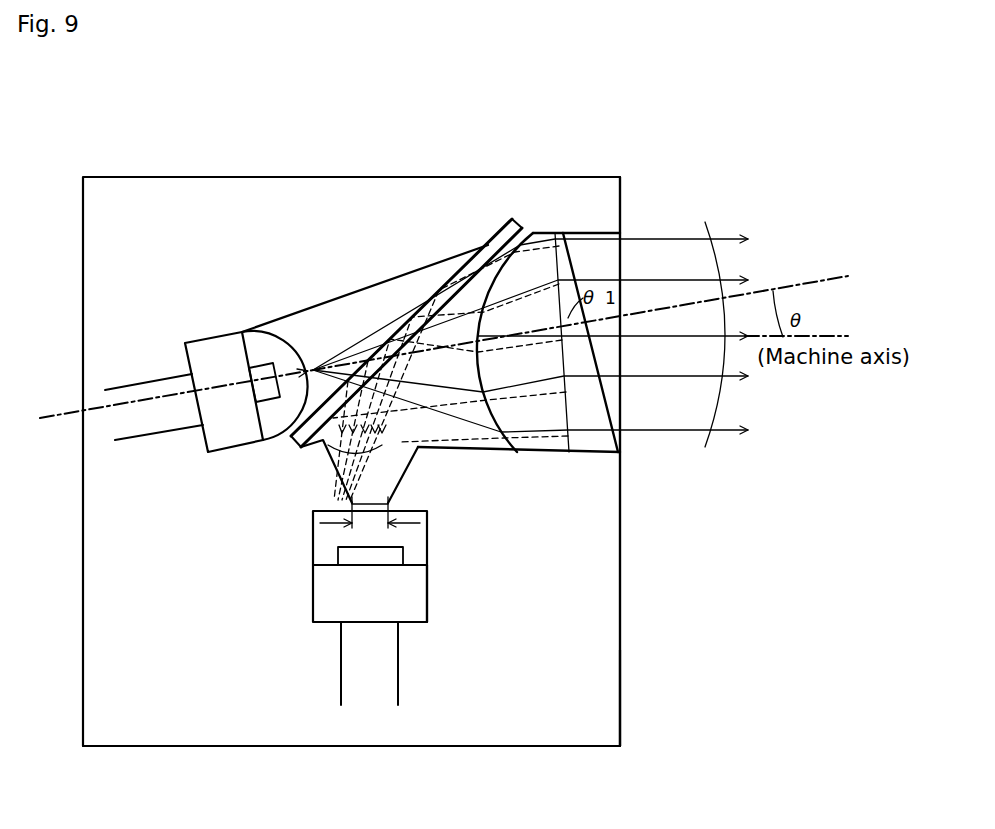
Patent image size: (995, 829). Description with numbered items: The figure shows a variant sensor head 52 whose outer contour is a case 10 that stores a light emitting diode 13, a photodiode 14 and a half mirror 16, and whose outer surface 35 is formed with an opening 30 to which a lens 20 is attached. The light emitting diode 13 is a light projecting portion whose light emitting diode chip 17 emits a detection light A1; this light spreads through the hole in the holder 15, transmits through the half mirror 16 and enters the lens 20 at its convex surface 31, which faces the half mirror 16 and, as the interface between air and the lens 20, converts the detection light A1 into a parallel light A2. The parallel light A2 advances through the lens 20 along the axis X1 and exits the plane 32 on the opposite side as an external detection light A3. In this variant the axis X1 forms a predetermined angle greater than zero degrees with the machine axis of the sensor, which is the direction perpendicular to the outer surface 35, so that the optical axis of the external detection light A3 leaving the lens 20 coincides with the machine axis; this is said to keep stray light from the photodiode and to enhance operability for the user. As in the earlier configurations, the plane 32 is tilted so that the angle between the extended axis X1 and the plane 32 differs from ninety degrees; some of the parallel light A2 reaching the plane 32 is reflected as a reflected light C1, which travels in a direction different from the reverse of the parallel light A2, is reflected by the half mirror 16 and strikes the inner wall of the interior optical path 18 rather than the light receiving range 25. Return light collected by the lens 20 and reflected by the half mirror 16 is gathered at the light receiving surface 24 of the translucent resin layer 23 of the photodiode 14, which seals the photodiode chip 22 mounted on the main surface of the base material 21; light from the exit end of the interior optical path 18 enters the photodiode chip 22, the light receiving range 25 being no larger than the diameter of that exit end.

The case 10 is at (421, 177).
The light emitting diode 13 is at (232, 318).
The photodiode 14 is at (440, 577).
The holder 15 is at (373, 286).
The half mirror 16 is at (508, 228).
The light emitting diode chip 17 is at (262, 366).
The interior optical path 18 is at (400, 500).
The lens 20 is at (547, 320).
The base material 21 is at (412, 600).
The photodiode chip 22 is at (367, 557).
The translucent resin layer 23 is at (326, 553).
The light receiving surface 24 is at (316, 508).
The light receiving range 25 is at (372, 526).
The opening 30 is at (608, 261).
The convex surface 31 is at (508, 450).
The plane 32 is at (608, 403).
The outer surface 35 is at (621, 697).
The sensor head 52 is at (618, 148).
The detection light A1 is at (326, 372).
The parallel light A2 is at (570, 440).
The external detection light A3 is at (707, 447).
The reflected light C1 is at (378, 447).
The axis X1 is at (807, 282).